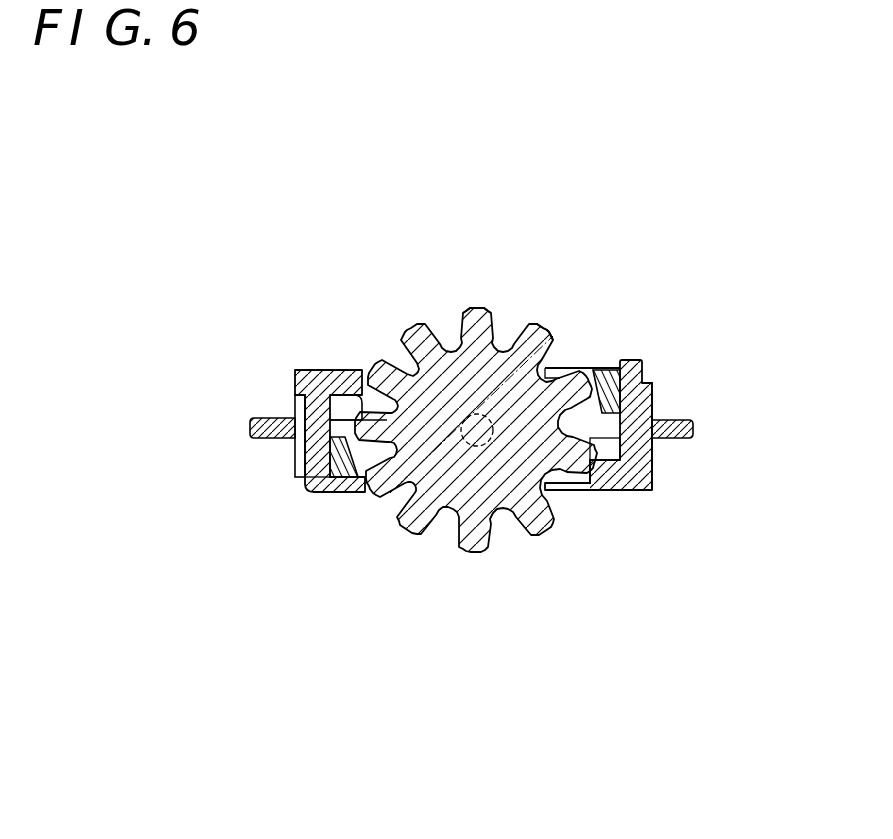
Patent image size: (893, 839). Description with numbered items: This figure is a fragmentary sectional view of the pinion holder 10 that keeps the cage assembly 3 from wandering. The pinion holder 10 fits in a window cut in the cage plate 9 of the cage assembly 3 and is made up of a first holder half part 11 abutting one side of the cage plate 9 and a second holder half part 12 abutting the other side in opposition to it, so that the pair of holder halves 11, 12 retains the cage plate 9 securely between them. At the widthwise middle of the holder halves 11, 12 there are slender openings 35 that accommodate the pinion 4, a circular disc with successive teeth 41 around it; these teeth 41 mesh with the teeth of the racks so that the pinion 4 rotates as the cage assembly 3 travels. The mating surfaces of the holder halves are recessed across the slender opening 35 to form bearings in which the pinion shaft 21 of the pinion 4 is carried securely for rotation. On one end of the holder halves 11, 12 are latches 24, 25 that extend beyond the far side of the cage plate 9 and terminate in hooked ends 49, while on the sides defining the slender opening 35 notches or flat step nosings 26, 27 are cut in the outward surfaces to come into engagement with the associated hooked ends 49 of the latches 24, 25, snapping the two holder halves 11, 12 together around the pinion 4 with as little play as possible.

The cage assembly 3 is at (270, 420).
The cage plate 9 is at (685, 438).
The pinion 4 is at (453, 383).
The pinion holder 10 is at (654, 362).
The first holder half part 11 is at (345, 370).
The second holder half part 12 is at (598, 488).
The pinion shaft 21 is at (484, 445).
The latch 24 is at (300, 452).
The latch 25 is at (658, 400).
The notch or flat step nosing 26 is at (611, 372).
The notch or flat step nosing 27 is at (323, 490).
The slender opening 35 is at (378, 370).
The teeth 41 is at (535, 340).
The hooked end 49 is at (342, 490).